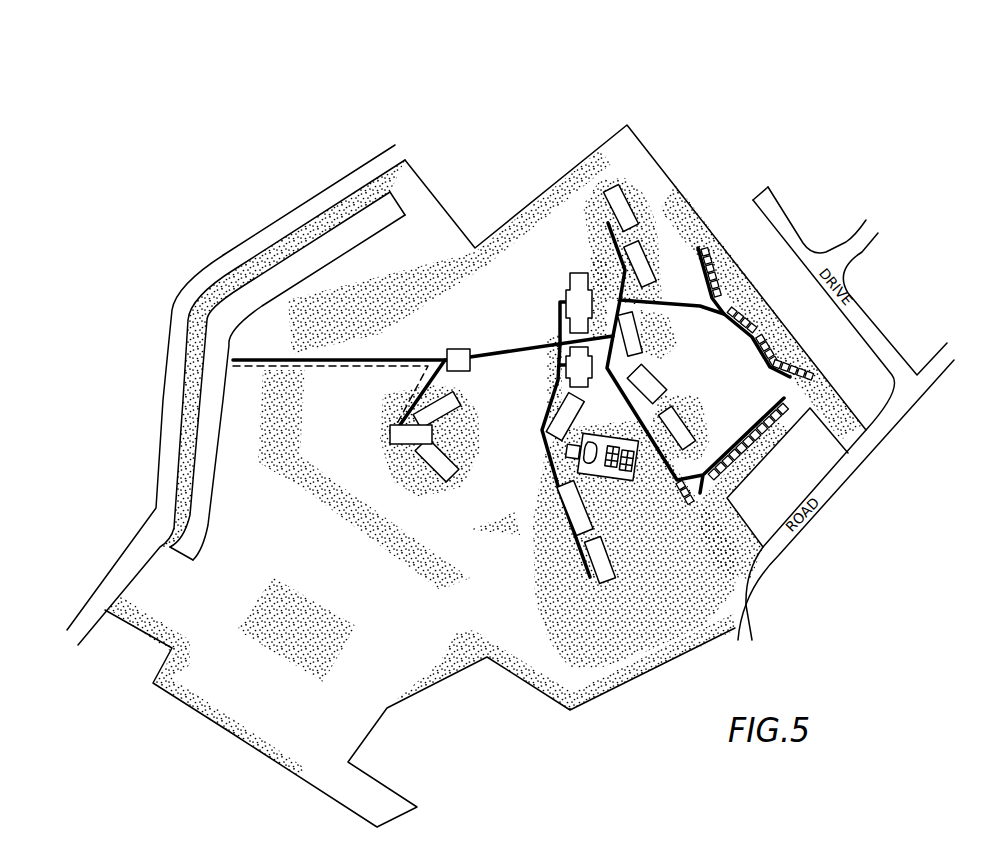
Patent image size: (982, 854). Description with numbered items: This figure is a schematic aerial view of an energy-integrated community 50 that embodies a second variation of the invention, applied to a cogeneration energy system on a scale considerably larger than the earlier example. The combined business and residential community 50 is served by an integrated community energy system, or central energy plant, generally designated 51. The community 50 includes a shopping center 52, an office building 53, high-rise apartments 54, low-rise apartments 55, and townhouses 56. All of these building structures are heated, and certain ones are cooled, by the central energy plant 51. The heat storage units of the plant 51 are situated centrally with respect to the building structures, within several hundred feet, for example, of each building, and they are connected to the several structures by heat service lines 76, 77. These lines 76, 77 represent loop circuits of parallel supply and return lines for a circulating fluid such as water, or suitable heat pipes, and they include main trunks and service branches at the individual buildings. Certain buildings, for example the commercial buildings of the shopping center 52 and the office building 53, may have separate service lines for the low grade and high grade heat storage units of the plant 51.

The community 50 is at (770, 125).
The integrated community energy system 51 is at (471, 350).
The shopping center 52 is at (266, 293).
The office building 53 is at (430, 450).
The high-rise apartments 54 is at (545, 478).
The low-rise apartments 55 is at (672, 370).
The townhouses 56 is at (735, 445).
The heat service line 76 is at (262, 360).
The heat service line 77 is at (384, 372).